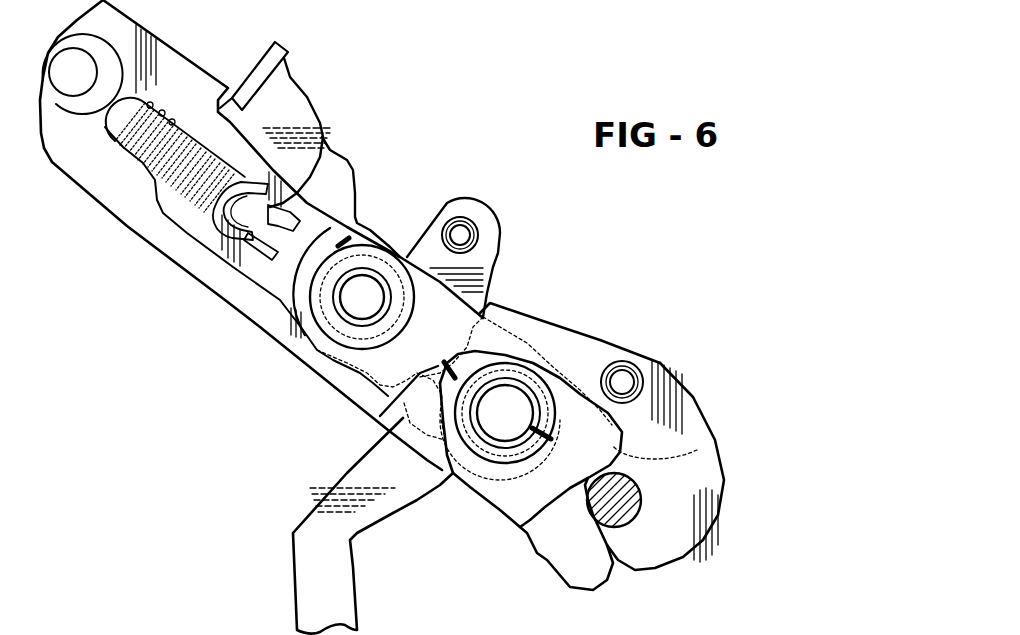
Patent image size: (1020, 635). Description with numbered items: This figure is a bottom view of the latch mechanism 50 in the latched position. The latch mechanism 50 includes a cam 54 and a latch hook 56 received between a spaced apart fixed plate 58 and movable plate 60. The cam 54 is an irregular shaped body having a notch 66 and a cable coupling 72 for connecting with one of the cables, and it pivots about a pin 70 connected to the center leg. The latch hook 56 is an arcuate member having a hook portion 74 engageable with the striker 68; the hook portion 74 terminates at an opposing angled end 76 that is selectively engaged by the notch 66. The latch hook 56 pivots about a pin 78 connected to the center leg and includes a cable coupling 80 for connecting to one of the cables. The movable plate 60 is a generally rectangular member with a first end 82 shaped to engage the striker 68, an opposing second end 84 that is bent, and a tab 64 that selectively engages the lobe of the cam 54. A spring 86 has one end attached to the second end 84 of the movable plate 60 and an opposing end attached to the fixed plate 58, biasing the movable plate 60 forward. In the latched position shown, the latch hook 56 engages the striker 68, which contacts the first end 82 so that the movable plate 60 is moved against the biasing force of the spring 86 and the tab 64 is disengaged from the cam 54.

The latch mechanism 50 is at (258, 328).
The cam 54 is at (483, 317).
The latch hook 56 is at (603, 333).
The fixed plate 58 is at (127, 227).
The movable plate 60 is at (197, 217).
The tab 64 is at (320, 135).
The notch 66 is at (410, 400).
The striker 68 is at (623, 510).
The pin 70 is at (362, 297).
The cable coupling 72 is at (460, 237).
The hook portion 74 is at (660, 533).
The angled end 76 is at (480, 313).
The pin 78 is at (423, 474).
The cable coupling 80 is at (622, 382).
The first end 82 is at (697, 450).
The second end 84 is at (125, 115).
The spring 86 is at (196, 145).